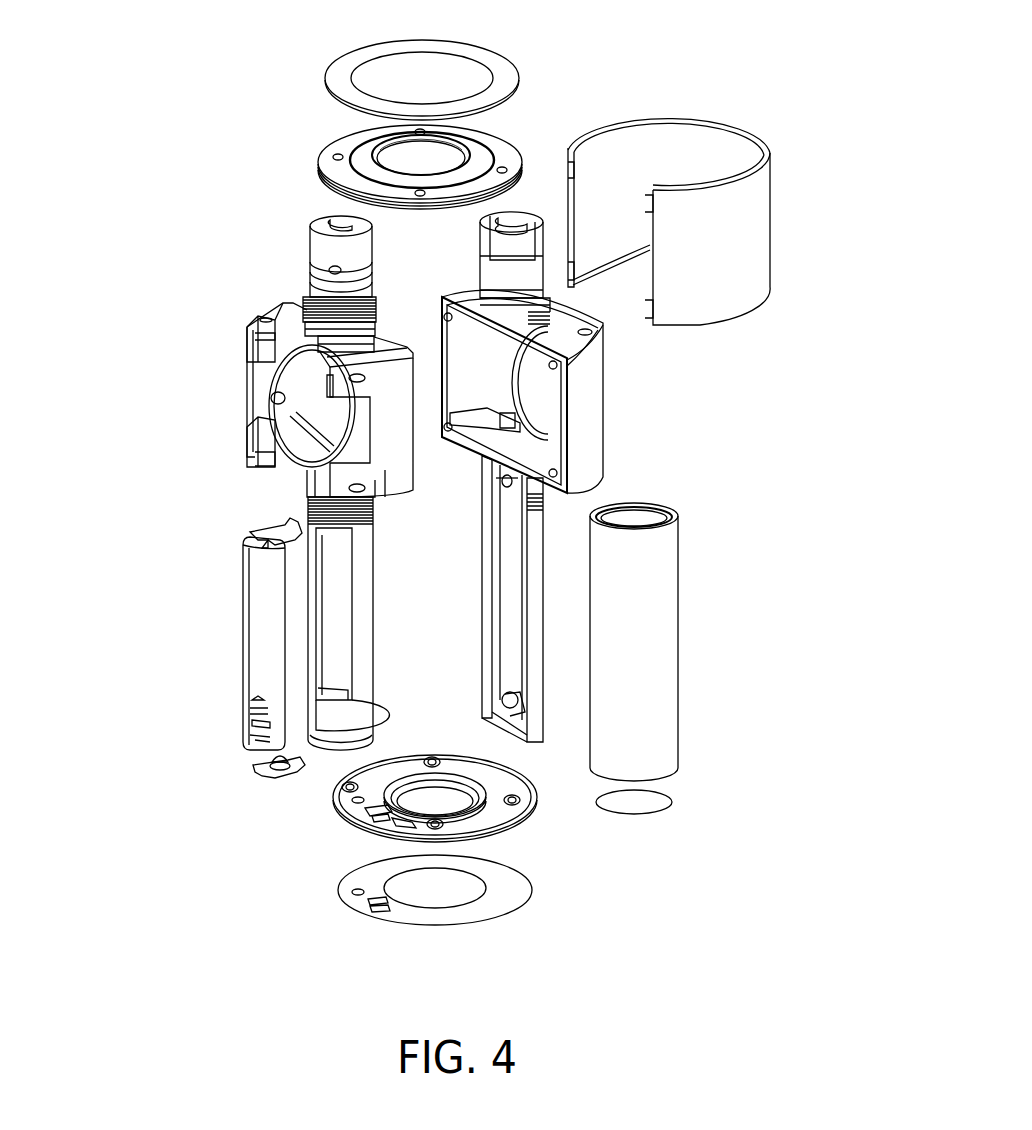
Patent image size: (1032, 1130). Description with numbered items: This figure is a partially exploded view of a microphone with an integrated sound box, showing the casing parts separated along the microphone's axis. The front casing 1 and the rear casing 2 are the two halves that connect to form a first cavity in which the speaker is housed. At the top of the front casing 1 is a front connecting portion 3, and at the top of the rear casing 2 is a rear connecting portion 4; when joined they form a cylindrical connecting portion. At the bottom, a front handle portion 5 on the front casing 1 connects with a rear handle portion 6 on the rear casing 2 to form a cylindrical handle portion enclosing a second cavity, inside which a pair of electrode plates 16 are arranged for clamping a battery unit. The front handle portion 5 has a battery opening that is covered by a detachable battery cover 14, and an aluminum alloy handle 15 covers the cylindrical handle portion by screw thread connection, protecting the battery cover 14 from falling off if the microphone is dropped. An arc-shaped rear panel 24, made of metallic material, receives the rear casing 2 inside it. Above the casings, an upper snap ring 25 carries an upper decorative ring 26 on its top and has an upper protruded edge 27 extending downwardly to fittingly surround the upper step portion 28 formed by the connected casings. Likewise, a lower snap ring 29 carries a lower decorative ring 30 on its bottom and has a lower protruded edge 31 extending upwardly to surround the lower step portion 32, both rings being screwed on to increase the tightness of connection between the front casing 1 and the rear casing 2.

The front casing 1 is at (444, 439).
The rear casing 2 is at (600, 445).
The front connecting portion 3 is at (318, 282).
The rear connecting portion 4 is at (531, 220).
The front handle portion 5 is at (358, 625).
The rear handle portion 6 is at (540, 555).
The battery cover 14 is at (262, 640).
The aluminum alloy handle 15 is at (640, 663).
The electrode plates 16 is at (265, 530).
The arc-shaped rear panel 24 is at (710, 295).
The upper snap ring 25 is at (340, 162).
The upper decorative ring 26 is at (335, 78).
The upper protruded edge 27 is at (325, 185).
The upper step portion 28 is at (255, 315).
The lower snap ring 29 is at (490, 812).
The lower decorative ring 30 is at (500, 887).
The lower protruded edge 31 is at (340, 810).
The lower step portion 32 is at (386, 470).